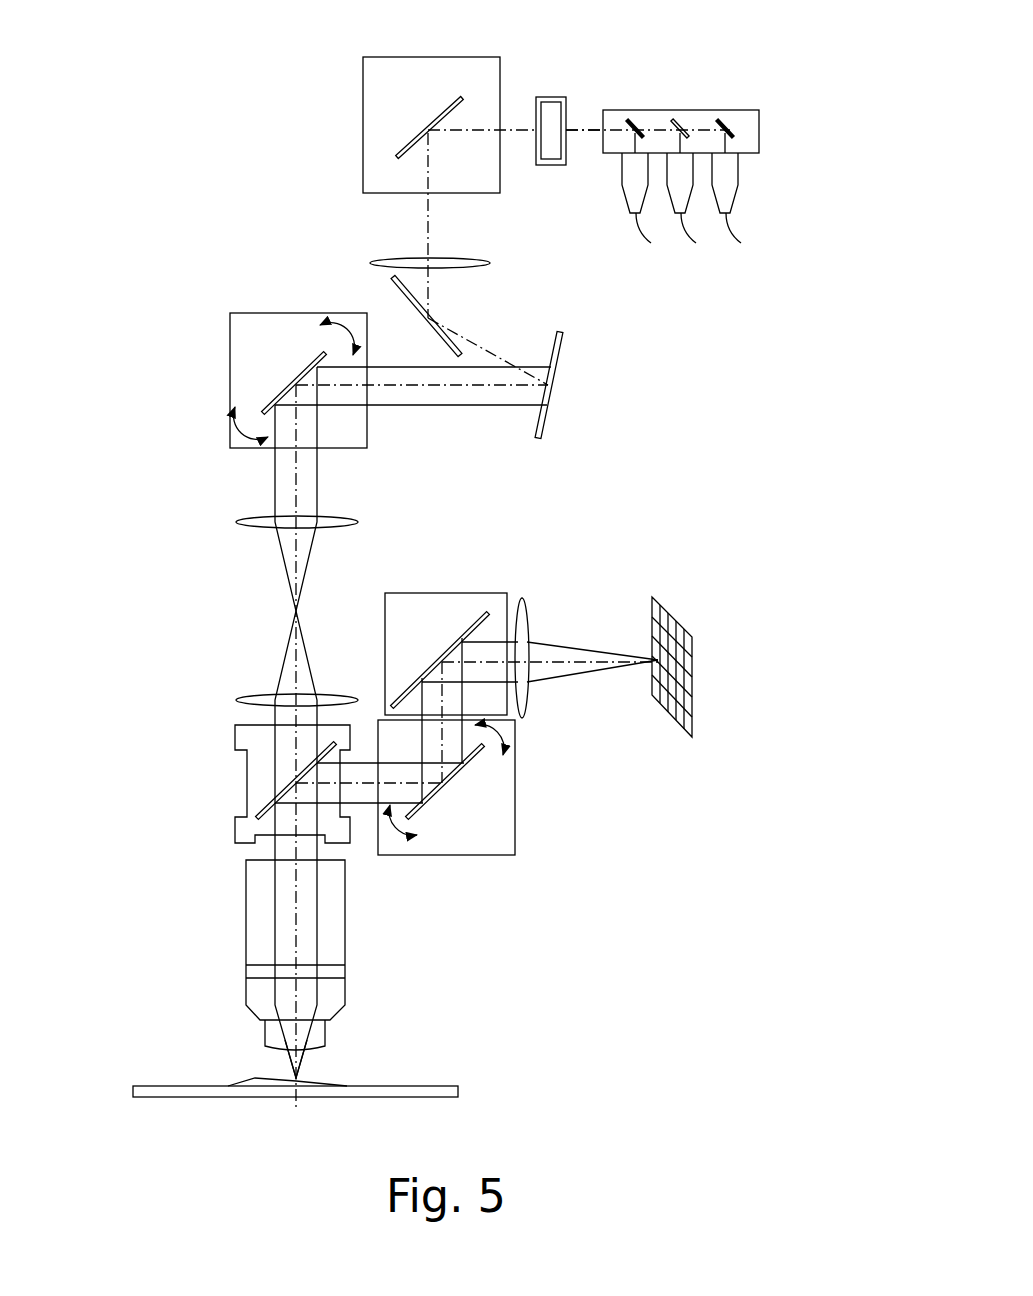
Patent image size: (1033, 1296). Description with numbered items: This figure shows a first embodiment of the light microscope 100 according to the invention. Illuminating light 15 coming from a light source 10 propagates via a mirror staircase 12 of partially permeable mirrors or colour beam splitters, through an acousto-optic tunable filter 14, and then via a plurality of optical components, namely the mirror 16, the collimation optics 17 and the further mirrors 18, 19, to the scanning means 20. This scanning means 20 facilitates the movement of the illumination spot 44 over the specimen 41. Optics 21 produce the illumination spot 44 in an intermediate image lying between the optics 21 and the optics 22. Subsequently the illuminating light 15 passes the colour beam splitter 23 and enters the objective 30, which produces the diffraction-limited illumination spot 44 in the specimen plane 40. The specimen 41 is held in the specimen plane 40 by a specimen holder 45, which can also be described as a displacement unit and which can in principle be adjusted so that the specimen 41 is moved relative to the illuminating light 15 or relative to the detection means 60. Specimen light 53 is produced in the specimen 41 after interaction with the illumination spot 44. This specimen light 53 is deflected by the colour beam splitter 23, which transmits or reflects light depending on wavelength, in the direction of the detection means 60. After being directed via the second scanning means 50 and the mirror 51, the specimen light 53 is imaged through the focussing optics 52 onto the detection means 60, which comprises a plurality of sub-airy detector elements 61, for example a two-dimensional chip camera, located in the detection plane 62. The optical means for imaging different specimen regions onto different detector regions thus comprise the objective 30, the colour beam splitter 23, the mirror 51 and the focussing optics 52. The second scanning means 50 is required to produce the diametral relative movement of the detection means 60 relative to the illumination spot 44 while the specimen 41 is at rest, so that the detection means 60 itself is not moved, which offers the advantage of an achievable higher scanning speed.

The light source 10 is at (703, 228).
The mirror staircase 12 is at (768, 112).
The acousto-optic tunable filter 14 is at (548, 97).
The illuminating light 15 is at (577, 128).
The mirror 16 is at (418, 133).
The collimation optics 17 is at (380, 260).
The mirror 18 is at (403, 295).
The mirror 19 is at (553, 372).
The scanning means 20 is at (283, 376).
The optics 21 is at (250, 520).
The optics 22 is at (263, 697).
The colour beam splitter 23 is at (250, 777).
The objective 30 is at (243, 918).
The specimen plane 40 is at (255, 1049).
The specimen holder 45 is at (146, 1086).
The specimen 41 is at (247, 1080).
The illumination spot 44 is at (302, 1072).
The second scanning means 50 is at (470, 778).
The mirror 51 is at (434, 666).
The focussing optics 52 is at (527, 612).
The specimen light 53 is at (583, 650).
The detection means 60 is at (746, 667).
The detection plane 62 is at (746, 667).
The detector elements 61 is at (683, 673).
The light microscope 100 is at (148, 788).